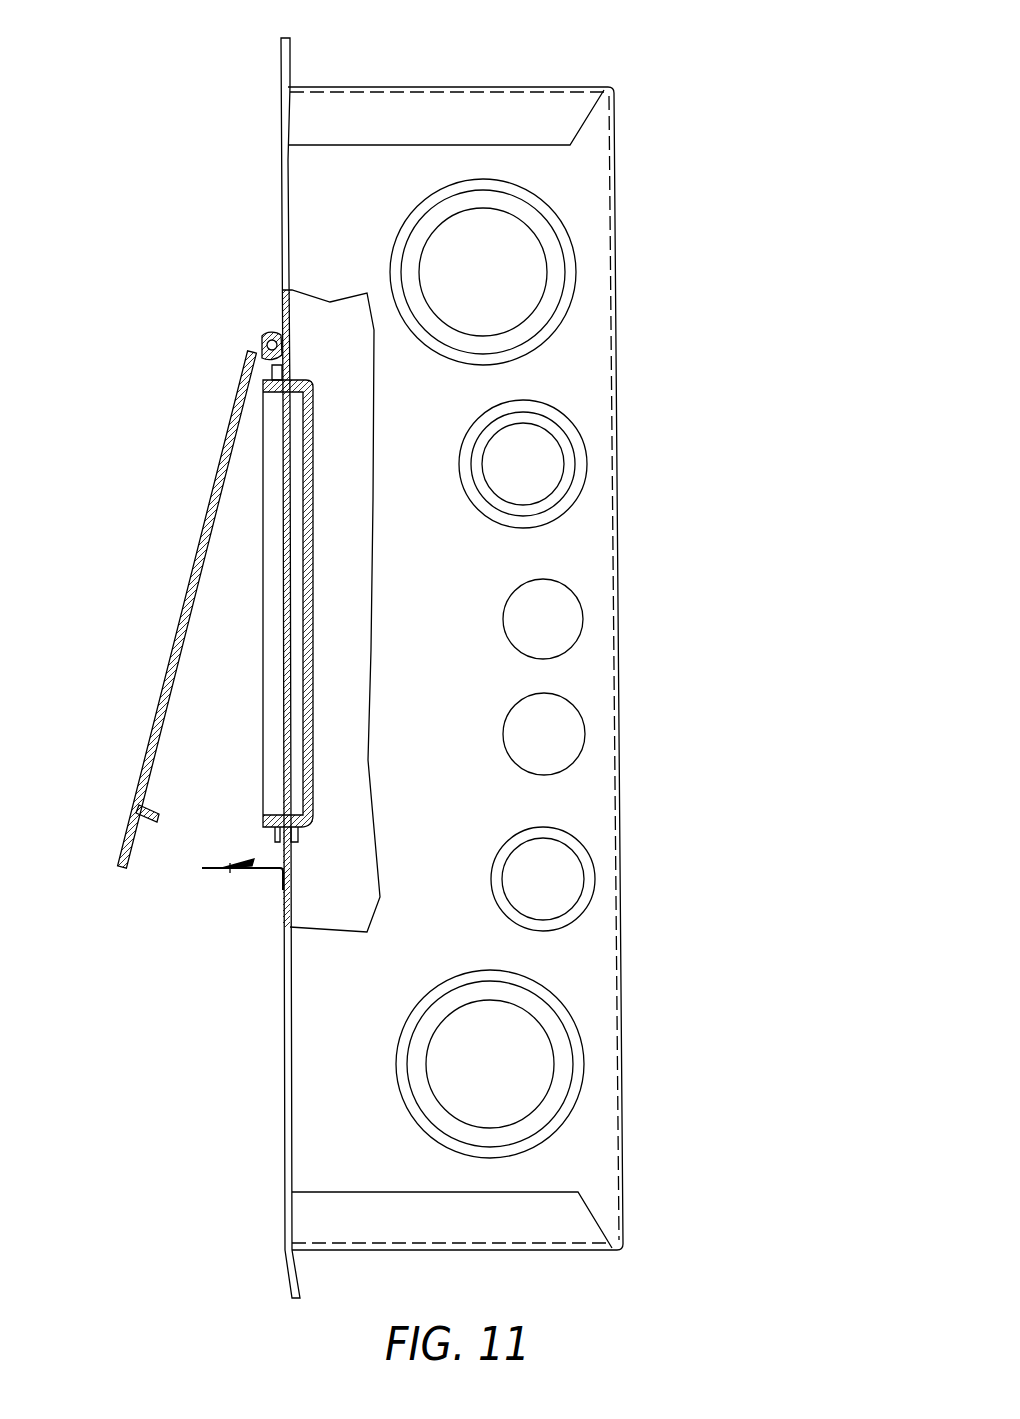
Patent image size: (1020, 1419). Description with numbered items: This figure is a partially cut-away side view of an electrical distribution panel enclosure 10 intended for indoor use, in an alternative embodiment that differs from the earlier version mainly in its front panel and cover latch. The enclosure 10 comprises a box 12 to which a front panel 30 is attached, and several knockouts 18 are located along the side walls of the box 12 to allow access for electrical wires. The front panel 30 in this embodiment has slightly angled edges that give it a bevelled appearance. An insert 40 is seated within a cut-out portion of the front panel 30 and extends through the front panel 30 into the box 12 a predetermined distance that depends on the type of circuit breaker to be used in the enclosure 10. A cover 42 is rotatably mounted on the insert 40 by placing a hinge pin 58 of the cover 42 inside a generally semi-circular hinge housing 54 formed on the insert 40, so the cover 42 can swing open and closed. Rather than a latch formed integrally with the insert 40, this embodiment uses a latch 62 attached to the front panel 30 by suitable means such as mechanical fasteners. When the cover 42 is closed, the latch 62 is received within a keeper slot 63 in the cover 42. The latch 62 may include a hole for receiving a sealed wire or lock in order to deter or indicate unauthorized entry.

The electrical distribution panel enclosure 10 is at (483, 74).
The box 12 is at (449, 646).
The knockout 18 is at (537, 1073).
The front panel 30 is at (280, 160).
The insert 40 is at (303, 748).
The cover 42 is at (176, 624).
The hinge housing 54 is at (266, 333).
The hinge pin 58 is at (260, 338).
The latch 62 is at (212, 873).
The keeper slot 63 is at (121, 856).